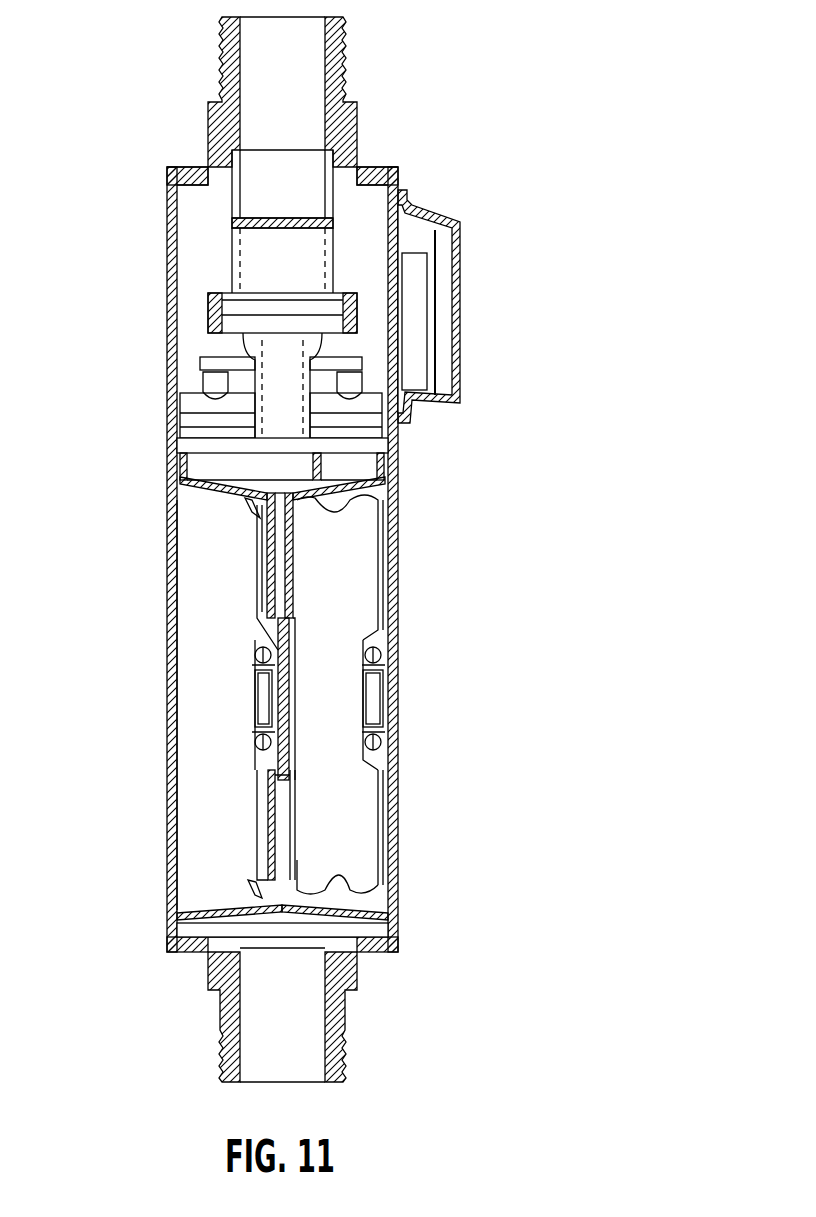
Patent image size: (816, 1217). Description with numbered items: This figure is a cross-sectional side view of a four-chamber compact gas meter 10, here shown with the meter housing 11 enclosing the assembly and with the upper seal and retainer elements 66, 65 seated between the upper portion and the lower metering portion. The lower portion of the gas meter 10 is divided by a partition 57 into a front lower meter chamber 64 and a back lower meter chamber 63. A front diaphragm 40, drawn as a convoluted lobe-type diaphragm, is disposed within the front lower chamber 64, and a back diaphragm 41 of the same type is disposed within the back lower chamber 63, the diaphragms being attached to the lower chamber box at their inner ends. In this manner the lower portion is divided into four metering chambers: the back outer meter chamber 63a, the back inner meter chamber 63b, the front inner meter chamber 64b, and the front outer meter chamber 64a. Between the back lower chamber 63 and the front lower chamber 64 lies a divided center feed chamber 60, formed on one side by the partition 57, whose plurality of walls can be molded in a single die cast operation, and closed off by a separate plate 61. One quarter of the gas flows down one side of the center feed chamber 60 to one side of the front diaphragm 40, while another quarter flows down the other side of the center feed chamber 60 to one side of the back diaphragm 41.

The gas meter 10 is at (410, 118).
The housing 11 is at (267, 345).
The seal ring 66 is at (197, 462).
The retainer ring 65 is at (370, 463).
The front diaphragm 40 is at (383, 563).
The center feed chamber 60 is at (283, 557).
The back diaphragm 41 is at (255, 590).
The partition 57 is at (287, 660).
The back lower meter chamber 63 is at (231, 711).
The front lower meter chamber 64 is at (339, 711).
The plate 61 is at (268, 797).
The back outer meter chamber 63a is at (190, 813).
The back inner meter chamber 63b is at (262, 820).
The front outer meter chamber 64a is at (343, 895).
The front inner meter chamber 64b is at (363, 827).